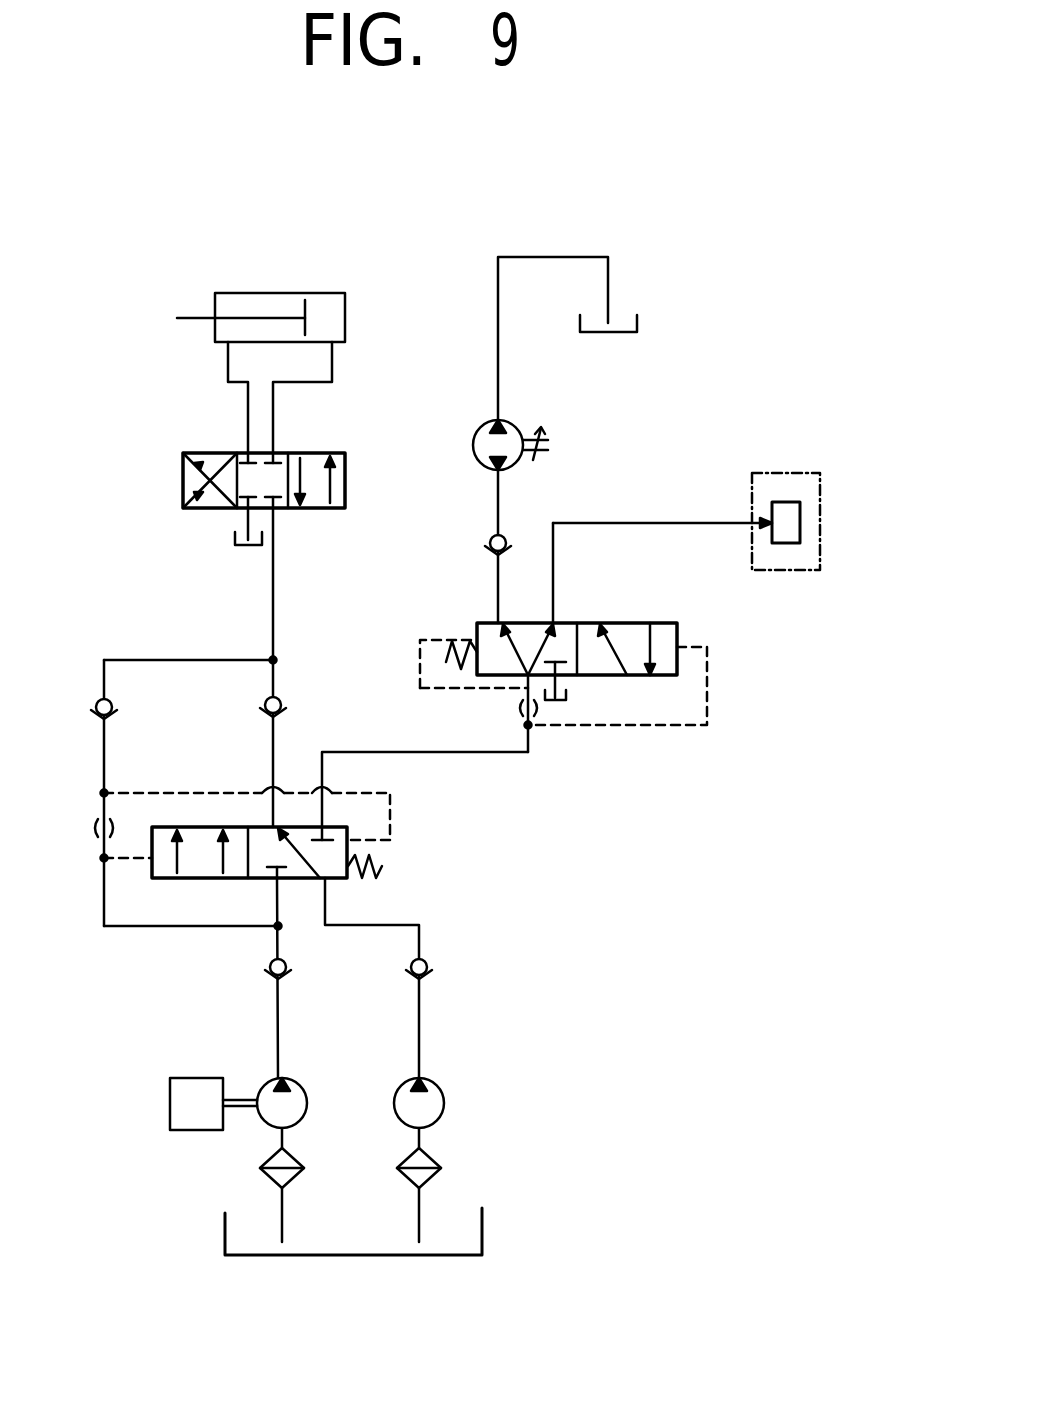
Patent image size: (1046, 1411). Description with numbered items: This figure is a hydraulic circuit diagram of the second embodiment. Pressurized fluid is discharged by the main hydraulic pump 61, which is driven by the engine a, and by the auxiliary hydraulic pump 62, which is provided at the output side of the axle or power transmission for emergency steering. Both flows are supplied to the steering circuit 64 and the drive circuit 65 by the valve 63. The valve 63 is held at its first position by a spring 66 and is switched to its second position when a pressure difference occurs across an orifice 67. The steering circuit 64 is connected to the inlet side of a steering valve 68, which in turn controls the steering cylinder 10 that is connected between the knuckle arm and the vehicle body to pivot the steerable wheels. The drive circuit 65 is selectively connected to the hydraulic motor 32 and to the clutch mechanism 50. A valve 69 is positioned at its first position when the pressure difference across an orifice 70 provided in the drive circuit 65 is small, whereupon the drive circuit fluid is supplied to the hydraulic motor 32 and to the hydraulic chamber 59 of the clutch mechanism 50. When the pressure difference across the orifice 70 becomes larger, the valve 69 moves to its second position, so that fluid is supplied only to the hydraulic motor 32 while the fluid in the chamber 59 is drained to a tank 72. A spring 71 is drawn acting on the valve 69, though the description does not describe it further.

The steering cylinder 10 is at (333, 292).
The steering valve 68 is at (349, 454).
The hydraulic motor 32 is at (486, 443).
The clutch mechanism 50 is at (824, 476).
The hydraulic chamber 59 is at (789, 538).
The orifice 70 is at (522, 708).
The spring 71 is at (457, 638).
The valve 69 is at (476, 676).
The tank 72 is at (567, 696).
The drive circuit 65 is at (483, 754).
The steering circuit 64 is at (280, 738).
The orifice 67 is at (97, 828).
The valve 63 is at (352, 880).
The spring 66 is at (383, 862).
The main hydraulic pump 61 is at (296, 1100).
The auxiliary hydraulic pump 62 is at (432, 1100).
The engine a is at (207, 1116).